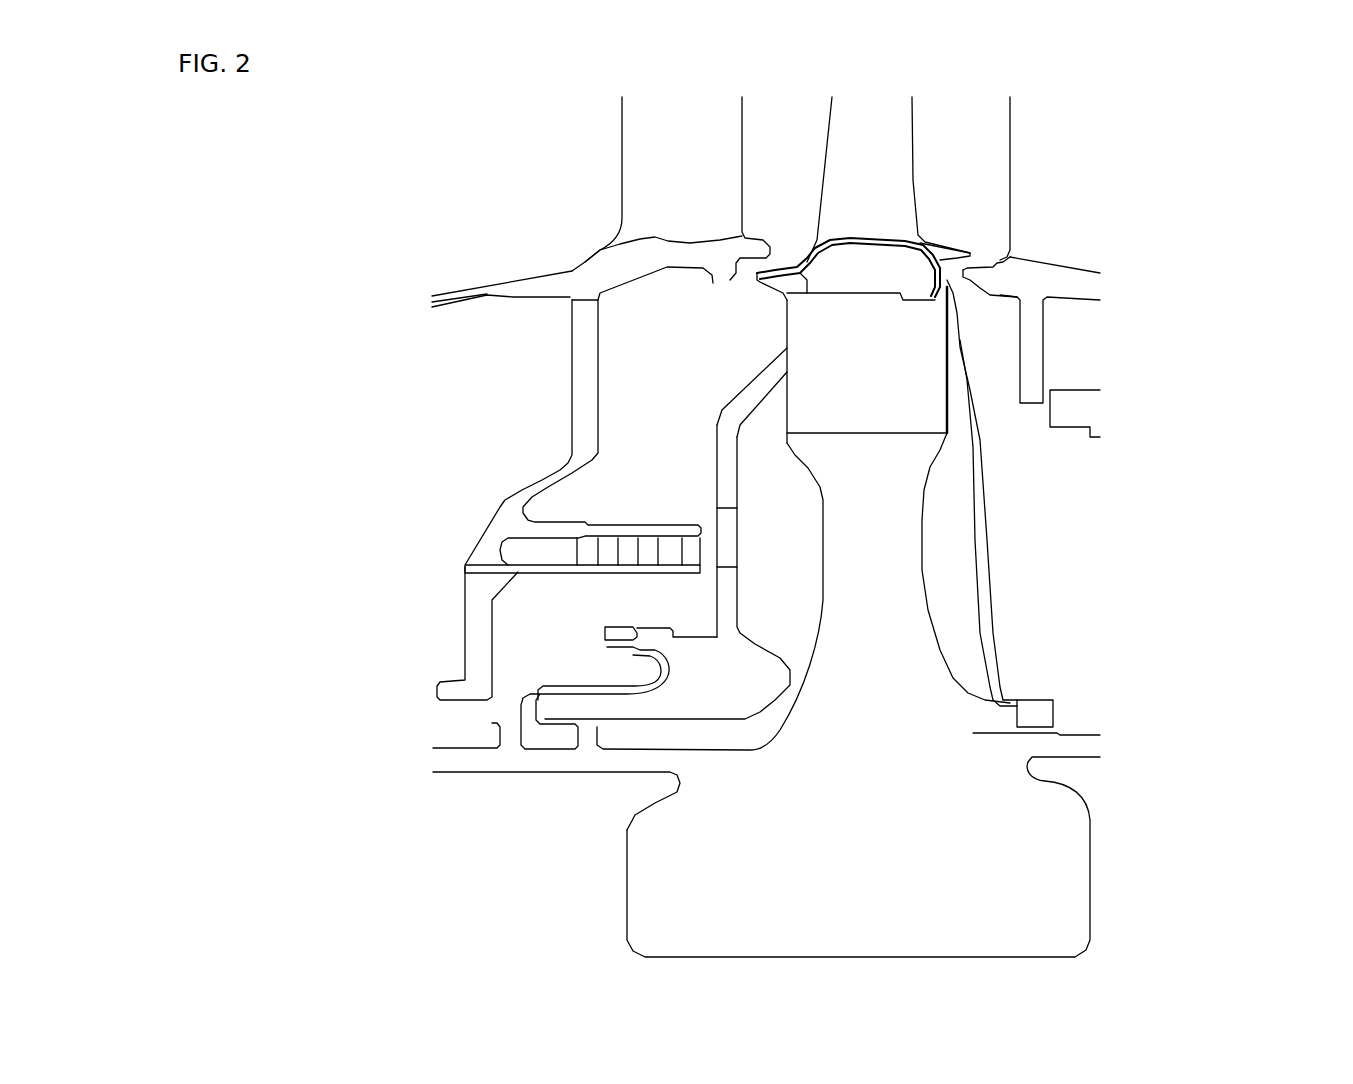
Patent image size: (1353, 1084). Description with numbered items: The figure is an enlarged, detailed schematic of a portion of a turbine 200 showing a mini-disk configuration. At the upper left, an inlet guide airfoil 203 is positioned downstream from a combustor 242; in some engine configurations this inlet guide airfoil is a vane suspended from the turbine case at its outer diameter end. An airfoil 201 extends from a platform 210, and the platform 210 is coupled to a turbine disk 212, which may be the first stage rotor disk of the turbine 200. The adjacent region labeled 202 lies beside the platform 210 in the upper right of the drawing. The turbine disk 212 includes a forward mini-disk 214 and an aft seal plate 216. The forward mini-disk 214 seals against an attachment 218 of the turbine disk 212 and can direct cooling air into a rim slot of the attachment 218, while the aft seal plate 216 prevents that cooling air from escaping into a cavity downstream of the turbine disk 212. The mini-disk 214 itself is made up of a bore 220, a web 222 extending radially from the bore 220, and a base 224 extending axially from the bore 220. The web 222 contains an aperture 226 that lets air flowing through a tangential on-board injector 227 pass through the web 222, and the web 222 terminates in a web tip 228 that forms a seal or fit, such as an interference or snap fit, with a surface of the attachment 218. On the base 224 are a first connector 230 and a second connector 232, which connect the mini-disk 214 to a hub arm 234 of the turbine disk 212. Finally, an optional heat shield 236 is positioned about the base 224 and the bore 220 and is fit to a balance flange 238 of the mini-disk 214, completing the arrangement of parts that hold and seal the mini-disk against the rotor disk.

The turbine 200 is at (300, 228).
The airfoil 201 is at (897, 158).
The stator vane assembly 202 is at (1073, 190).
The inlet guide airfoil 203 is at (740, 162).
The platform 210 is at (610, 262).
The turbine disk 212 is at (1073, 838).
The forward mini-disk 214 is at (778, 693).
The aft seal plate 216 is at (983, 572).
The attachment 218 is at (830, 413).
The bore 220 is at (713, 700).
The web 222 is at (740, 435).
The base 224 is at (623, 707).
The aperture 226 is at (752, 543).
The tangential on-board injector 227 is at (630, 543).
The web tip 228 is at (780, 357).
The first connector 230 is at (597, 722).
The second connector 232 is at (517, 719).
The hub arm 234 is at (537, 760).
The heat shield 236 is at (600, 690).
The balance flange 238 is at (640, 633).
The combustor 242 is at (507, 208).